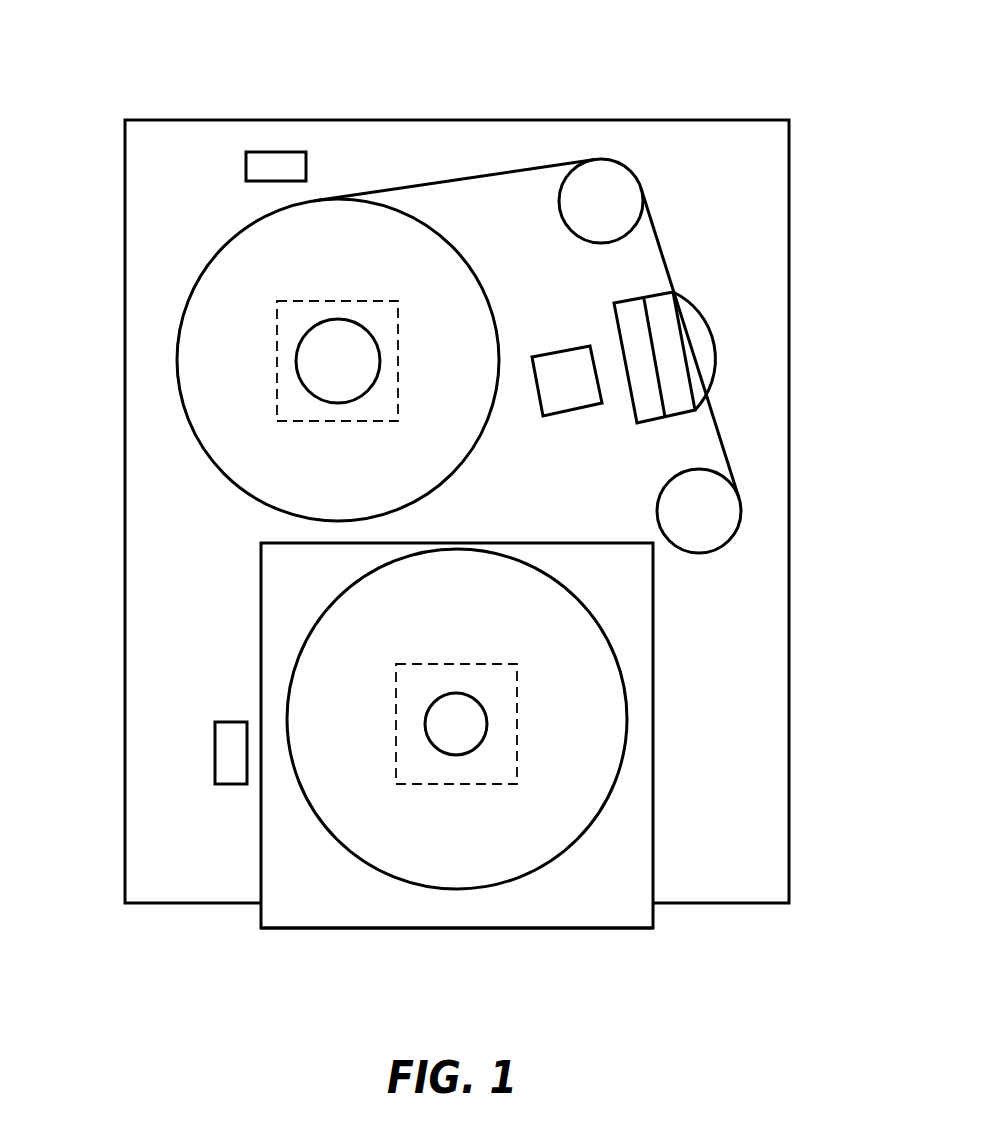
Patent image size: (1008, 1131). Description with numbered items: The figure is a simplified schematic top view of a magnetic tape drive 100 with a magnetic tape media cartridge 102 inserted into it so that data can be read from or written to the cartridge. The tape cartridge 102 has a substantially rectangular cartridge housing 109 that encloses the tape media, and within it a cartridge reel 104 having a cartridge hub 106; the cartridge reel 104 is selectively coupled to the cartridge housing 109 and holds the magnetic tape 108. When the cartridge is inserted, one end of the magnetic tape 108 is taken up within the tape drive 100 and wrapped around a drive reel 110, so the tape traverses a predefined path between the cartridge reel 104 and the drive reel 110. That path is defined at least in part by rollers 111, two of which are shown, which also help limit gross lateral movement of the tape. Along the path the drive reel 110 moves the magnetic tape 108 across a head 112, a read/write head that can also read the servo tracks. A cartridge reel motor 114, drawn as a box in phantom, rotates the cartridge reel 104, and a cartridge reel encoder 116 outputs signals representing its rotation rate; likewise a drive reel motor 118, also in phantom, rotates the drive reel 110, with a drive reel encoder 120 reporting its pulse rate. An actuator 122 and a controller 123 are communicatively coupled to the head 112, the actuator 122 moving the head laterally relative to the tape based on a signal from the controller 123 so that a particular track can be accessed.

The magnetic tape drive 100 is at (719, 98).
The magnetic tape media cartridge 102 is at (564, 955).
The cartridge reel 104 is at (487, 718).
The cartridge hub 106 is at (426, 723).
The magnetic tape 108 is at (472, 177).
The cartridge housing 109 is at (617, 928).
The drive reel 110 is at (297, 342).
The rollers 111 is at (599, 187).
The head 112 is at (693, 353).
The cartridge reel motor 114 is at (517, 750).
The cartridge reel encoder 116 is at (230, 755).
The drive reel motor 118 is at (277, 403).
The drive reel encoder 120 is at (275, 165).
The actuator 122 is at (645, 389).
The controller 123 is at (573, 363).